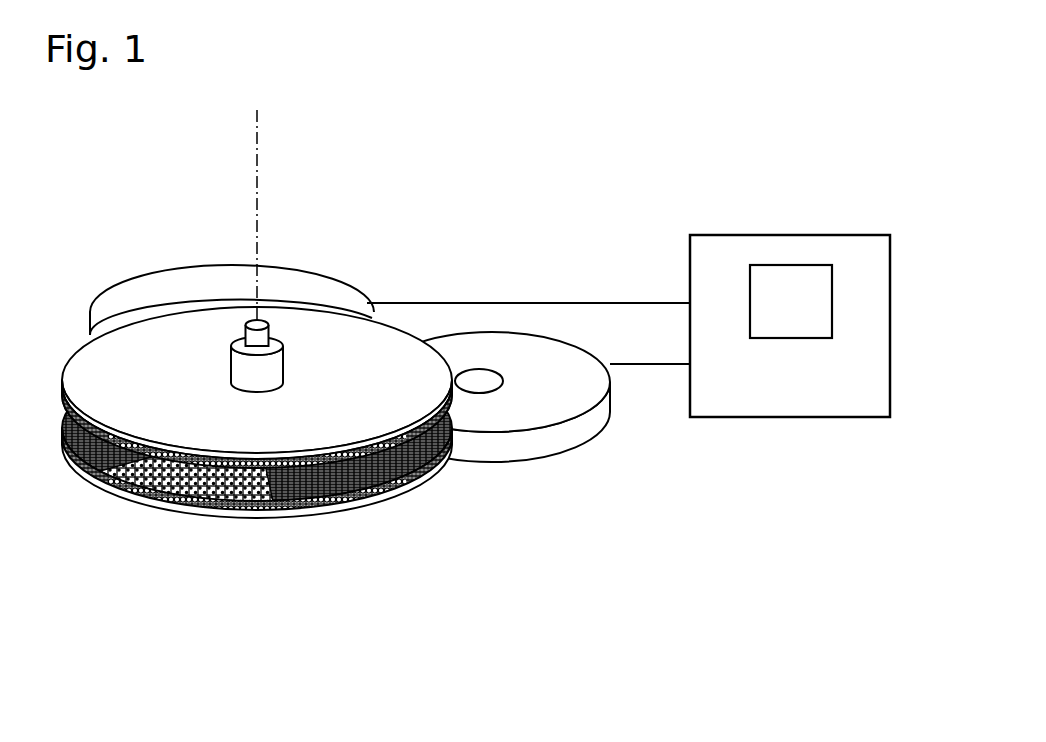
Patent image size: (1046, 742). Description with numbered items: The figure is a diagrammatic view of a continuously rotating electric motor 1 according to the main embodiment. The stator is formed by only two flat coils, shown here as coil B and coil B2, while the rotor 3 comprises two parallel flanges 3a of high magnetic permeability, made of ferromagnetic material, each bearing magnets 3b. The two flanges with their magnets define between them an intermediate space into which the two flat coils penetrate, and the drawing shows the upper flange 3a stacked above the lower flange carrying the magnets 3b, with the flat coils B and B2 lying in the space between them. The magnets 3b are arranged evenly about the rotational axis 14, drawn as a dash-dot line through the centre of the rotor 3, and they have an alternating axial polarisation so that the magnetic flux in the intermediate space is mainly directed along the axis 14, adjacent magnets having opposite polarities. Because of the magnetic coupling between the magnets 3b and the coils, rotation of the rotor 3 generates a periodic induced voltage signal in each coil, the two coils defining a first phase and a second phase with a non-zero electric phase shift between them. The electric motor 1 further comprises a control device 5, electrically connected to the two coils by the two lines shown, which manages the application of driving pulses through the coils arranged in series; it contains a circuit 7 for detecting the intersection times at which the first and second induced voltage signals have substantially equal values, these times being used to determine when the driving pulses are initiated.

The continuously rotating electric motor 1 is at (556, 236).
The rotor 3 is at (257, 429).
The flange 3a is at (320, 347).
The magnets 3b is at (317, 490).
The control device 5 is at (893, 347).
The circuit for detecting intersection times 7 is at (800, 265).
The rotational axis 14 is at (257, 150).
The flat coil B is at (522, 423).
The flat coil B2 is at (137, 290).